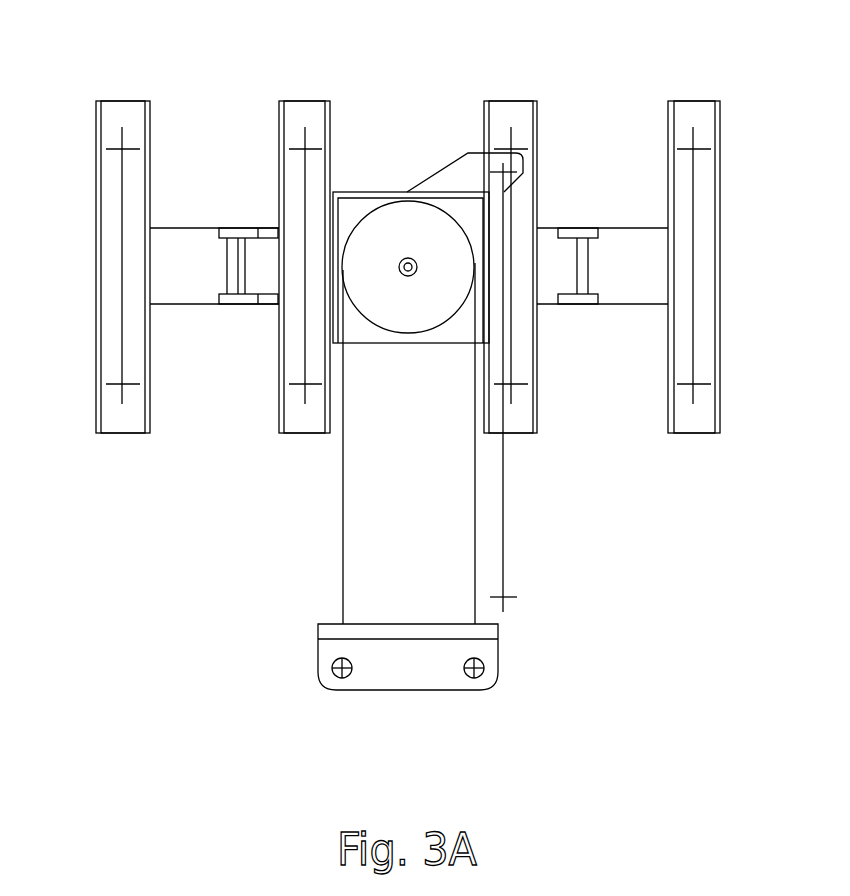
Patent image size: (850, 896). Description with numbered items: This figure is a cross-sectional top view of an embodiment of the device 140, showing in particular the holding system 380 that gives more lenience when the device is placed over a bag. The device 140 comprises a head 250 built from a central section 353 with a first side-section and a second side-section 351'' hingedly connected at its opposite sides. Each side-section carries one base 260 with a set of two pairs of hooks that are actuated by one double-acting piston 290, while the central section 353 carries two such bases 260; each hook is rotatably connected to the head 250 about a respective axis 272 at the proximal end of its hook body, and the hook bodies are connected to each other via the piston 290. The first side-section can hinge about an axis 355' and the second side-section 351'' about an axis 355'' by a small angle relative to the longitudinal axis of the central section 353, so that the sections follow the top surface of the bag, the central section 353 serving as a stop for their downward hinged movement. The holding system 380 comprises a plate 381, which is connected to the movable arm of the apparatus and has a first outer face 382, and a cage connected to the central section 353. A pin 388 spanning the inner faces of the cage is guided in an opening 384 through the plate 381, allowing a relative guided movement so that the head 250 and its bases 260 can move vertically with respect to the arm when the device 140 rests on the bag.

The device 140 is at (130, 610).
The head 250 is at (80, 275).
The base 260 is at (704, 192).
The axis 272 is at (132, 147).
The double-acting piston 290 is at (697, 272).
The second side-section 351'' is at (172, 366).
The central section 353 is at (346, 92).
The axis 355' is at (230, 181).
The axis 355'' is at (602, 179).
The holding system 380 is at (348, 175).
The plate 381 is at (408, 362).
The first outer face 382 is at (405, 220).
The opening 384 is at (413, 274).
The pin 388 is at (417, 261).